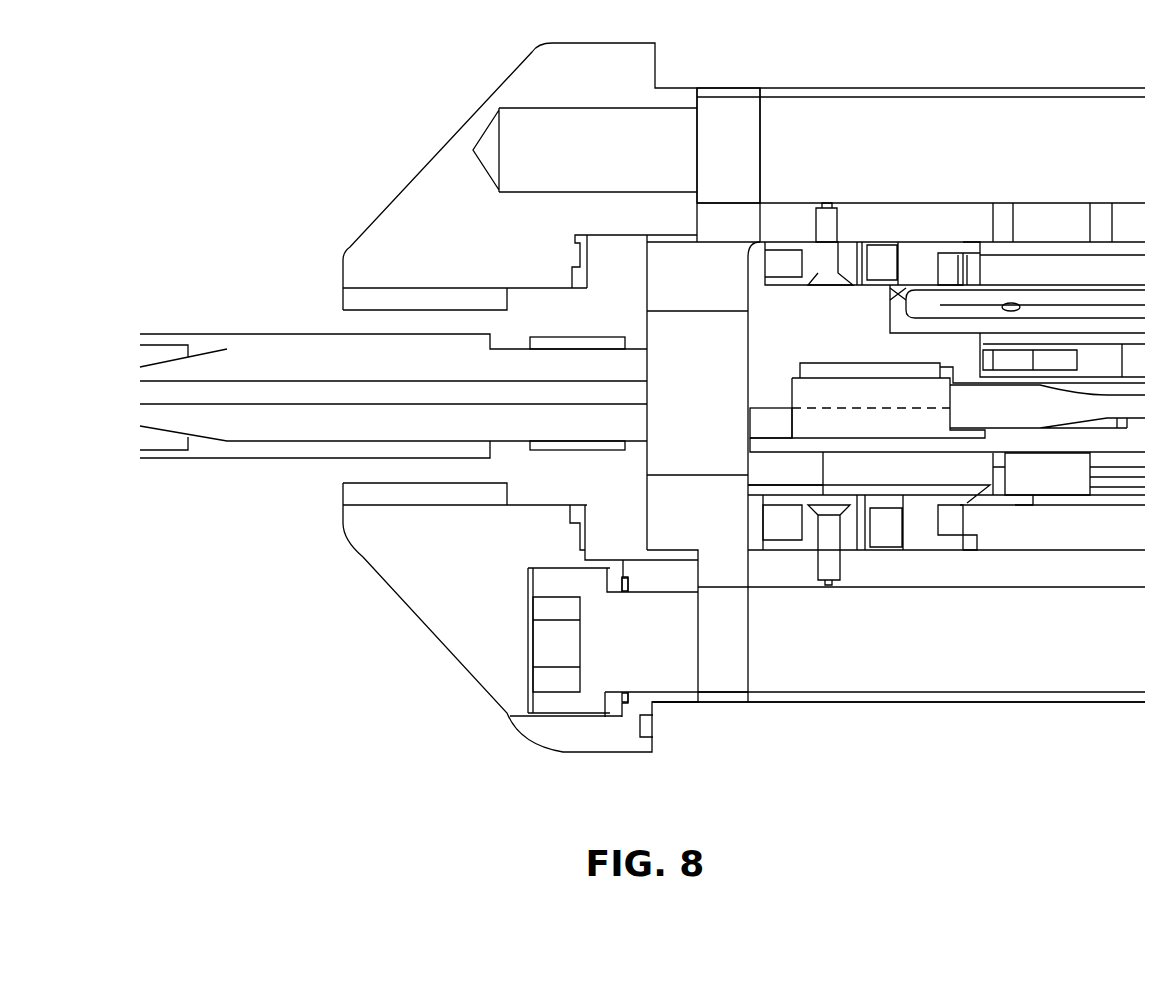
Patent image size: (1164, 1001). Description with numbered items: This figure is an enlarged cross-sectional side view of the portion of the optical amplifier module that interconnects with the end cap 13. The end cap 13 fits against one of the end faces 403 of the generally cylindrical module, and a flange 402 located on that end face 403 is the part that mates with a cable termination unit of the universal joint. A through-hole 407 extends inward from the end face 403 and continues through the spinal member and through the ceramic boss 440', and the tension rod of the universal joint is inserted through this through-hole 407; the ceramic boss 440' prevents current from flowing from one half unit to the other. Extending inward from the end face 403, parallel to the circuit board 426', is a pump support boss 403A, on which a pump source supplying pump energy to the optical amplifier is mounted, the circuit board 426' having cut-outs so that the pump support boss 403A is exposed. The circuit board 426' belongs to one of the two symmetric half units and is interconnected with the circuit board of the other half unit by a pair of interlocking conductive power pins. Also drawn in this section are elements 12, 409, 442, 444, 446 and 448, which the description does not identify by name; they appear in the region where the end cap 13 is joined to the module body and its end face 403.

The tube 12 is at (228, 334).
The end cap 13 is at (370, 542).
The flange 402 is at (733, 338).
The end face 403 is at (727, 258).
The pump support boss 403A is at (923, 470).
The through-hole 407 is at (523, 120).
The outer body 409 is at (870, 677).
The circuit board 426' is at (1017, 268).
The ceramic boss 440' is at (732, 120).
The block 442 is at (770, 427).
The cartridge 444 is at (617, 572).
The clip 446 is at (625, 700).
The retainer 448 is at (603, 582).